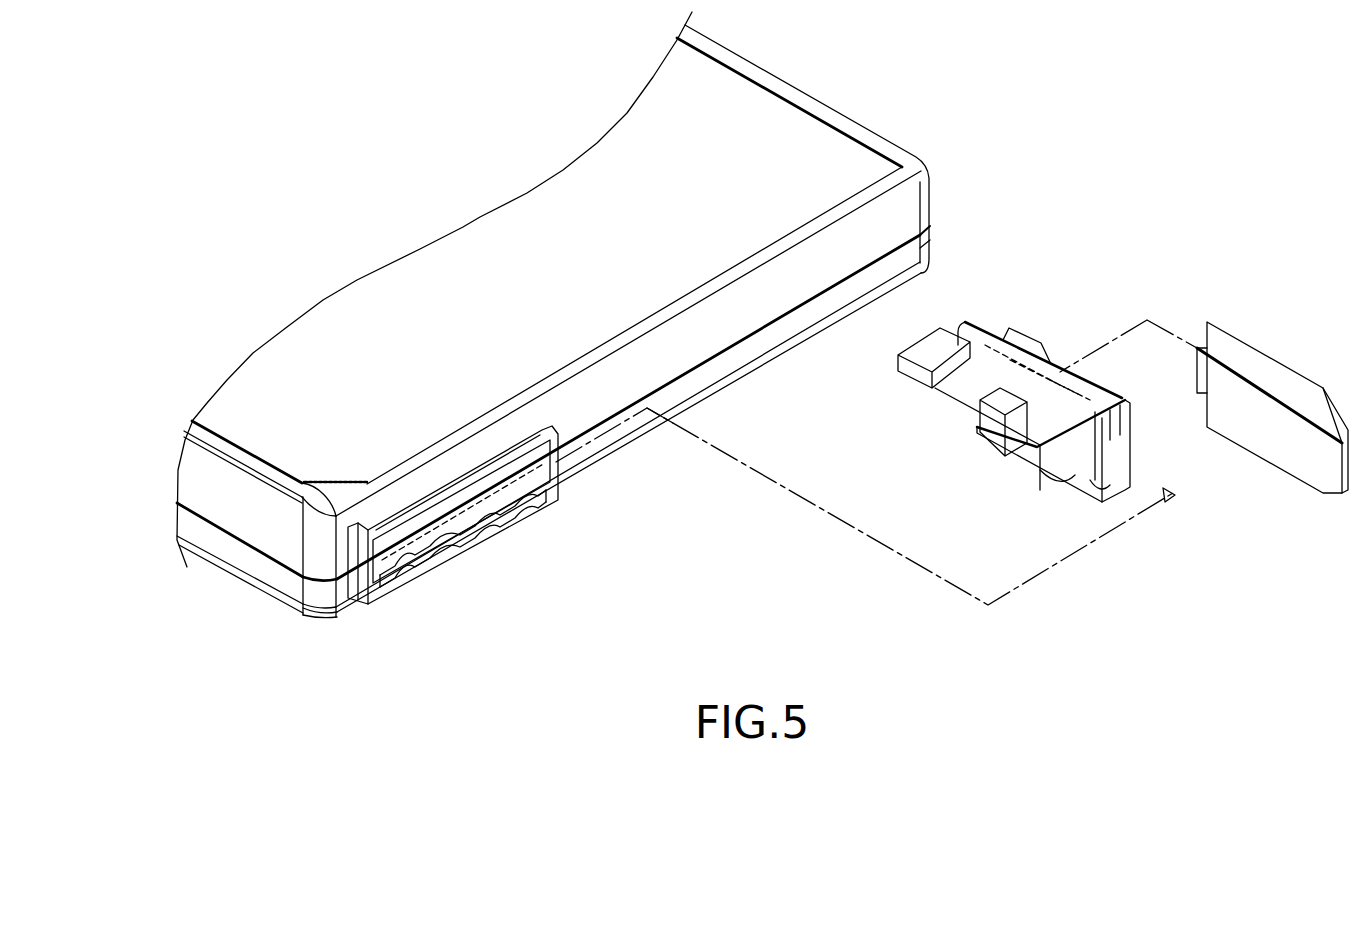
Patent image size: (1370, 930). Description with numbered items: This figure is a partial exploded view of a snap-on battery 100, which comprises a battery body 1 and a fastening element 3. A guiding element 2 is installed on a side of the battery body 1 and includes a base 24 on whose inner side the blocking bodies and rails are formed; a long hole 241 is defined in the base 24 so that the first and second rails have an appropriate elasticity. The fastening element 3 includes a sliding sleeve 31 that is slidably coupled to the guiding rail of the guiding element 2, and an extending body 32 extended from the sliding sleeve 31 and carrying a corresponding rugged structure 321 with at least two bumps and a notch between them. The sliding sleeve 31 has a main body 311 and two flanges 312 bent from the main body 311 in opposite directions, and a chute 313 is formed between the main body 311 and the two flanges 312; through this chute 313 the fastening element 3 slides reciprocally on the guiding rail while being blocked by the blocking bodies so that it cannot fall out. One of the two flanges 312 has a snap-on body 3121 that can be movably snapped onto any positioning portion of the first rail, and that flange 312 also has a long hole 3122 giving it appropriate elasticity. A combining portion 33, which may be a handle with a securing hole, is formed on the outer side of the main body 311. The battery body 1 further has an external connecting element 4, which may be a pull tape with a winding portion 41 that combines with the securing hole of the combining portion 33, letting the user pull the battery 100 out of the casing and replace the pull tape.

The battery 100 is at (455, 70).
The battery body 1 is at (750, 122).
The guiding element 2 is at (553, 512).
The base 24 is at (422, 567).
The long hole 241 is at (476, 518).
The fastening element 3 is at (1026, 273).
The sliding sleeve 31 is at (1083, 625).
The main body 311 is at (1135, 440).
The flanges 312 is at (1034, 462).
The chute 313 is at (1130, 418).
The snap-on body 3121 is at (1037, 443).
The long hole 3122 is at (1073, 388).
The extending body 32 is at (982, 328).
The corresponding rugged structure 321 is at (950, 408).
The combining portion 33 is at (1027, 330).
The external connecting element 4 is at (1307, 373).
The winding portion 41 is at (1237, 402).